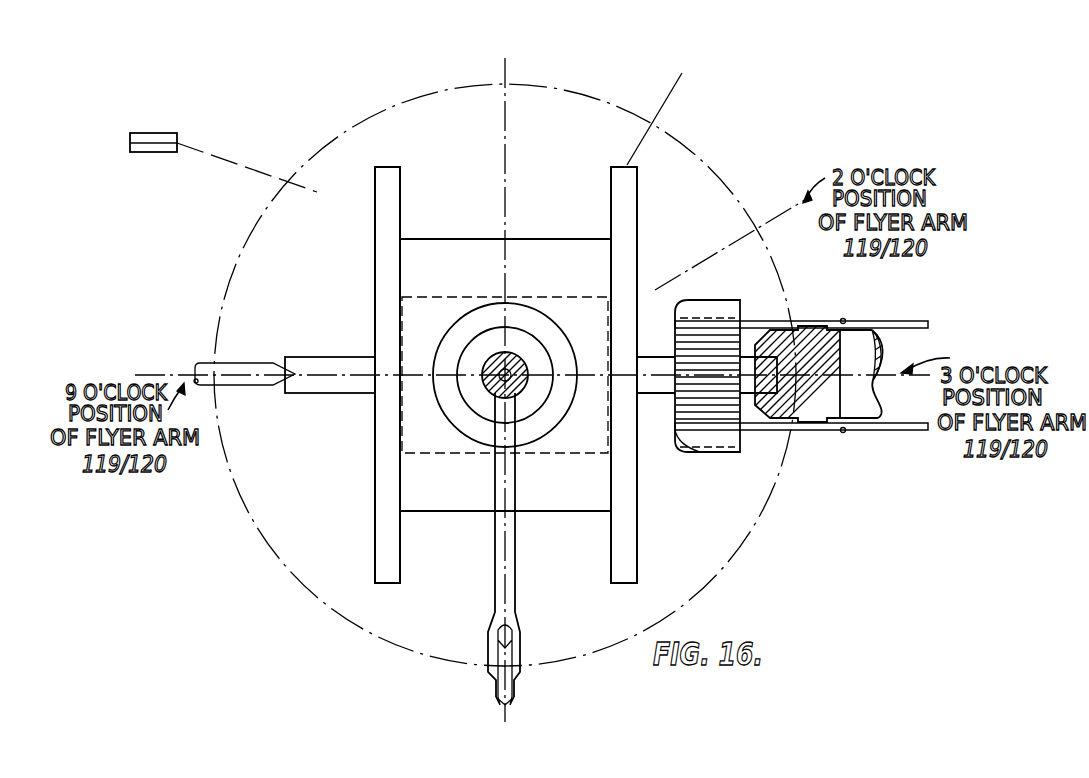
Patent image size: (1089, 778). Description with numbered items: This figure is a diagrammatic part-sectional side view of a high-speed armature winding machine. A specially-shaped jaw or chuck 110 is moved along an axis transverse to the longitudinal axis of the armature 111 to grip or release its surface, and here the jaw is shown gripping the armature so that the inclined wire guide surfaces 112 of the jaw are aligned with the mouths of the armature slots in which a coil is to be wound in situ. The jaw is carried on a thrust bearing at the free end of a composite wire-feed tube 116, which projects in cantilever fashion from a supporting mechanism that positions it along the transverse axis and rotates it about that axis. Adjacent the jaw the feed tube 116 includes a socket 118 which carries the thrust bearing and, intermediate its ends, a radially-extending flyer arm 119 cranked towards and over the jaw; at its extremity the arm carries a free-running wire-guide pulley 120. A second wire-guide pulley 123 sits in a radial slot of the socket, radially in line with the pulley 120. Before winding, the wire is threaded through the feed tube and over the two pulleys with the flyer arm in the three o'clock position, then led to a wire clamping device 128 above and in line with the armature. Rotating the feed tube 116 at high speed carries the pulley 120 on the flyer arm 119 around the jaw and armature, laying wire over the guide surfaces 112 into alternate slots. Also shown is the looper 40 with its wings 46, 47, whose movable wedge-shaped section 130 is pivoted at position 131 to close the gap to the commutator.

The jaw 110 is at (373, 499).
The armature 111 is at (413, 297).
The wire guide surface 112 is at (623, 242).
The wire-feed tube 116 is at (488, 397).
The socket 118 is at (548, 352).
The flyer arm 119 is at (495, 587).
The wire-guide pulley 120 is at (515, 685).
The second wire-guide pulley 123 is at (508, 405).
The wire clamping device 128 is at (163, 113).
The looper 40 is at (773, 316).
The wing 46 is at (707, 300).
The wing 47 is at (710, 453).
The wedge-shaped section 130 is at (728, 317).
The pivot position 131 is at (842, 297).